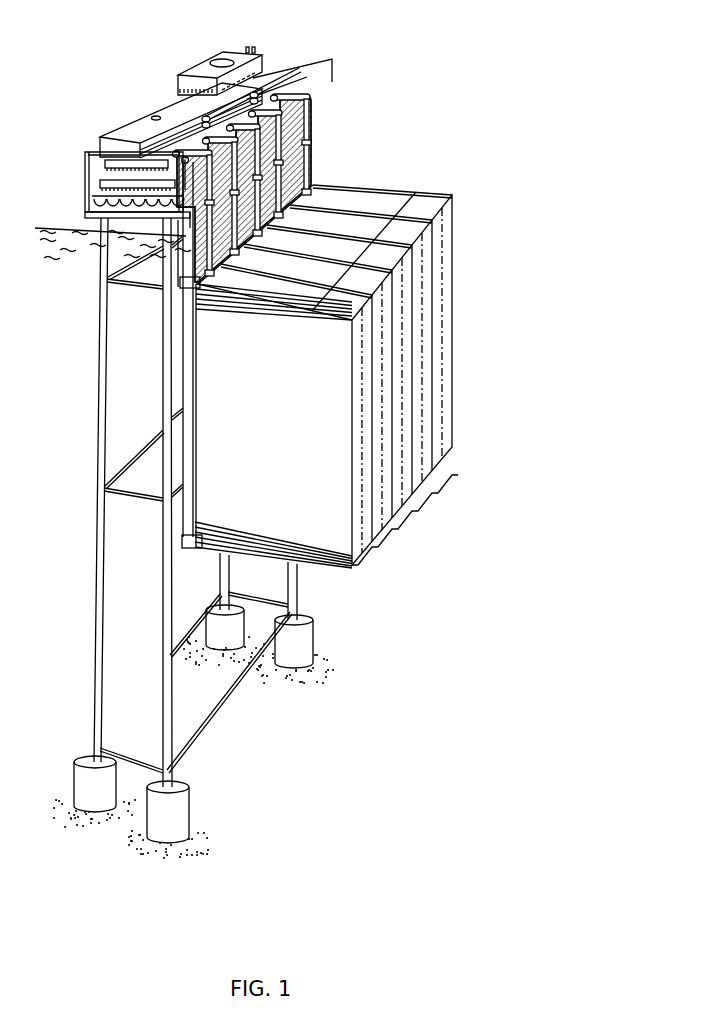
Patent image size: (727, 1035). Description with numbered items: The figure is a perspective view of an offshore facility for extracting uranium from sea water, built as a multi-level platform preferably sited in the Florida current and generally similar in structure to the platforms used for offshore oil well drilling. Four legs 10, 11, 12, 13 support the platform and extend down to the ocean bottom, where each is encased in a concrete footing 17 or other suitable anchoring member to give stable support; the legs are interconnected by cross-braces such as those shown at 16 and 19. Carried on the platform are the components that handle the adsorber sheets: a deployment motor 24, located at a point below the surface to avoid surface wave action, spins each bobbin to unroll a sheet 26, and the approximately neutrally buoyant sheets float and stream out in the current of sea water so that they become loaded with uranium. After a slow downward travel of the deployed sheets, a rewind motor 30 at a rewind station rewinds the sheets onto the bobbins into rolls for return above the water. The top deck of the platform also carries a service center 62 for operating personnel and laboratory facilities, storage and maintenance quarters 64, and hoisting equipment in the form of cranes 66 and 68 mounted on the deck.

The leg 10 is at (96, 653).
The leg 11 is at (168, 697).
The leg 12 is at (224, 572).
The leg 13 is at (291, 588).
The cross-brace 16 is at (160, 250).
The concrete footing 17 is at (304, 648).
The cross-brace 19 is at (207, 732).
The deployment motor 24 is at (183, 288).
The sheet 26 is at (273, 420).
The rewind motor 30 is at (186, 549).
The service center 62 is at (238, 58).
The storage and maintenance quarters 64 is at (133, 126).
The crane 66 is at (263, 80).
The crane 68 is at (322, 58).